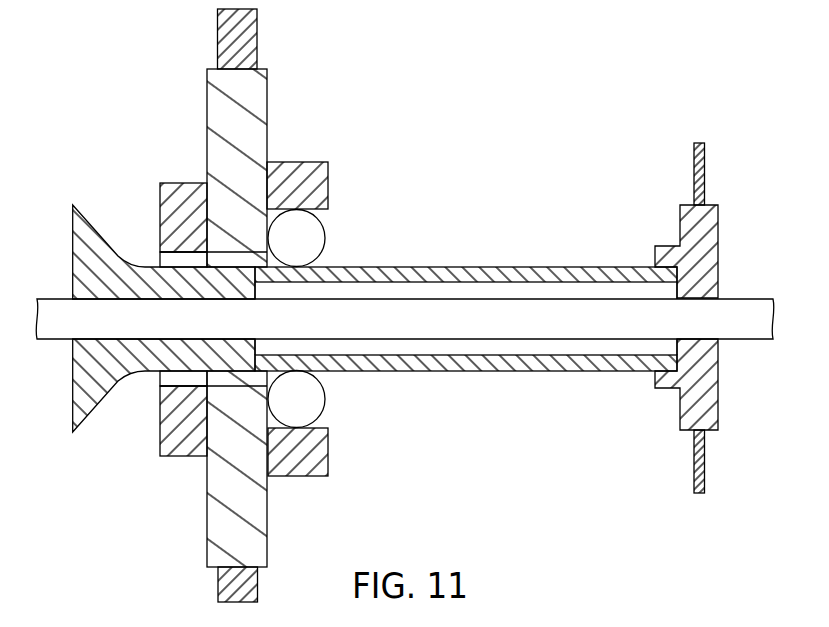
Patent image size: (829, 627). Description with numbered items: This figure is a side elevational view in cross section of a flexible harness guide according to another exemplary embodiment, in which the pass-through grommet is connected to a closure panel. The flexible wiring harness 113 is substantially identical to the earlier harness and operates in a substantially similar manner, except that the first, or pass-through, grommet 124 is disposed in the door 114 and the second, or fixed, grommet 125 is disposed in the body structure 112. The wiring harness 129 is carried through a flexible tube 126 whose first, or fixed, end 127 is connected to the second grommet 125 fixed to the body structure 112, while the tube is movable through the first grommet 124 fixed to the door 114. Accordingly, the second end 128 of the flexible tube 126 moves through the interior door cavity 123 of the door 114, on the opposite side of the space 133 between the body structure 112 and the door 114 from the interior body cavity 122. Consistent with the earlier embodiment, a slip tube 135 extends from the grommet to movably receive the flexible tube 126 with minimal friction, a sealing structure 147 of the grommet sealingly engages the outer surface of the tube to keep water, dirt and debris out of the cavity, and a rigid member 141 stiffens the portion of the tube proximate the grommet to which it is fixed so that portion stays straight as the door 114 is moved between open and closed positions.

The body structure 112 is at (706, 163).
The flexible wiring harness 113 is at (538, 408).
The door 114 is at (259, 42).
The interior body cavity 122 is at (775, 229).
The interior door cavity 123 is at (192, 162).
The first grommet 124 is at (312, 479).
The second grommet 125 is at (678, 219).
The flexible tube 126 is at (510, 266).
The first end 127 is at (679, 268).
The second end 128 is at (97, 230).
The wiring harness 129 is at (54, 298).
The space 133 is at (462, 252).
The slip tube 135 is at (159, 378).
The rigid member 141 is at (423, 359).
The sealing structure 147 is at (326, 241).